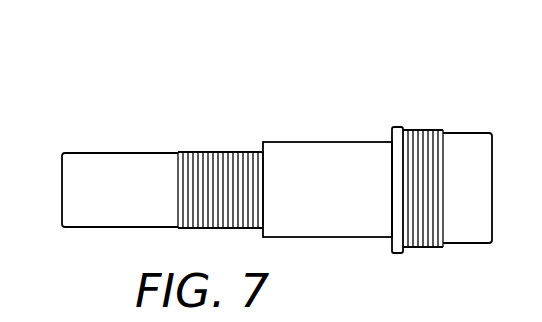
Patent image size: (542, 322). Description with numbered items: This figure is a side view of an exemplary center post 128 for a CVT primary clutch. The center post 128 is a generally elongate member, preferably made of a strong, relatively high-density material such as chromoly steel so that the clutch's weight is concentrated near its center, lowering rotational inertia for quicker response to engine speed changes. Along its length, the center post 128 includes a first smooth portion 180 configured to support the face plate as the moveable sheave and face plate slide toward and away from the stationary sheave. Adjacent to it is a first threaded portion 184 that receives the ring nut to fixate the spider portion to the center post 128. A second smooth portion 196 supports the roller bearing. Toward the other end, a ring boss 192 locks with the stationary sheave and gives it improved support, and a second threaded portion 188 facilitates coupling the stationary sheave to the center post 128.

The center post 128 is at (138, 77).
The first smooth portion 180 is at (107, 155).
The first threaded portion 184 is at (222, 150).
The second smooth portion 196 is at (324, 143).
The ring boss 192 is at (398, 127).
The second threaded portion 188 is at (435, 130).